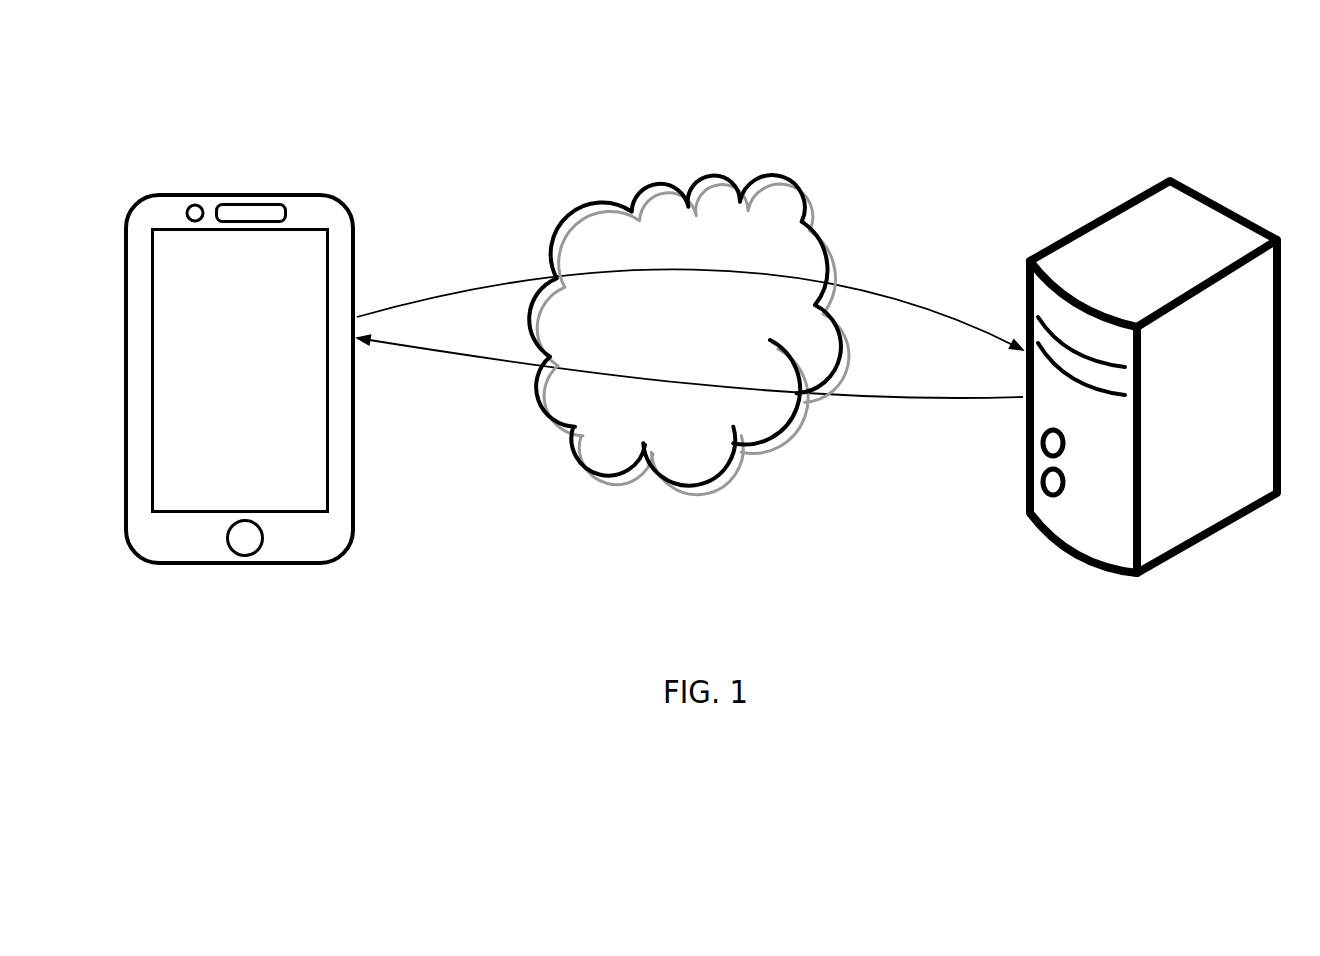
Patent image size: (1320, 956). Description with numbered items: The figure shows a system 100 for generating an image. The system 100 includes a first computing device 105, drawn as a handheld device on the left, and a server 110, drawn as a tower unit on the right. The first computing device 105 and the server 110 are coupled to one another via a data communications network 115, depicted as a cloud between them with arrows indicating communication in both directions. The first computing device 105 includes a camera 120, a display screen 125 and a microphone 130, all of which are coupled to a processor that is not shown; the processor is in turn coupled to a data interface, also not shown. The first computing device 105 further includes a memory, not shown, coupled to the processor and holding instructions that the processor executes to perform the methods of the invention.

The system 100 is at (415, 82).
The first computing device 105 is at (357, 254).
The server 110 is at (1075, 233).
The data communications network 115 is at (653, 187).
The camera 120 is at (193, 204).
The display screen 125 is at (253, 340).
The microphone 130 is at (263, 204).